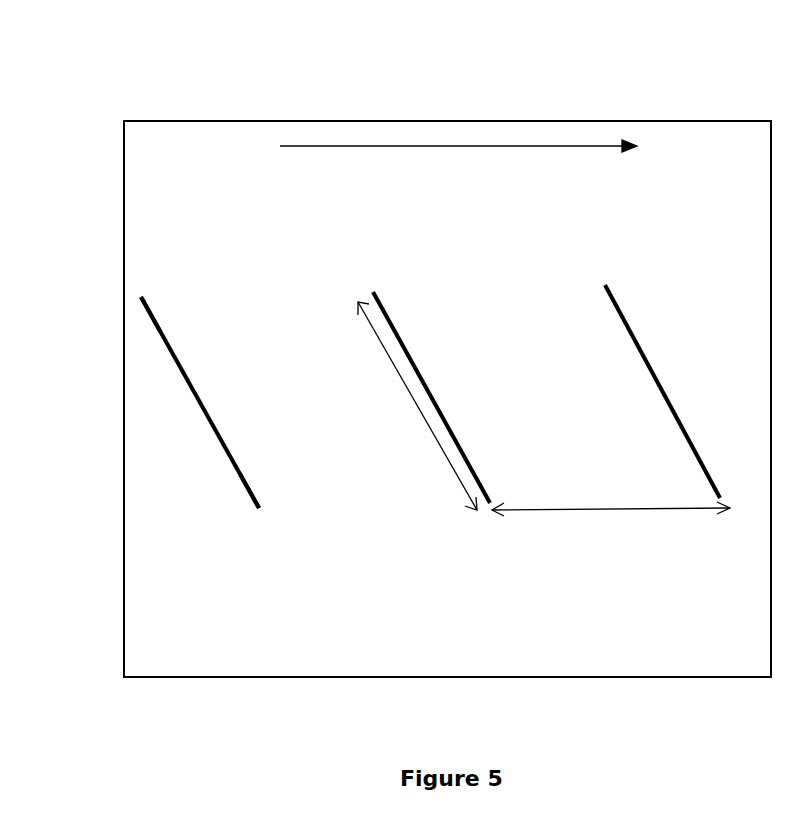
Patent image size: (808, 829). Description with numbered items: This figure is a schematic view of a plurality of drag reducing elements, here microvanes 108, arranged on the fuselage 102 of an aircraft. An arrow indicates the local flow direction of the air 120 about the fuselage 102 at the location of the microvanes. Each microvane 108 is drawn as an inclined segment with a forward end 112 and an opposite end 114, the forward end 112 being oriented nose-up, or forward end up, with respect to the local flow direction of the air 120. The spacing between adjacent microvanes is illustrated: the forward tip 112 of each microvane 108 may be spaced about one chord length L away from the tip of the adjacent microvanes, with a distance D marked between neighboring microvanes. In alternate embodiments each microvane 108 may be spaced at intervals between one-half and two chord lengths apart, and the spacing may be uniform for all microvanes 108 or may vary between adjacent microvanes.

The fuselage 102 is at (153, 141).
The air 120 is at (470, 145).
The microvane 108 is at (186, 392).
The forward end 112 is at (135, 292).
The second end 114 is at (260, 512).
The chord length L is at (377, 332).
The distance D is at (662, 508).